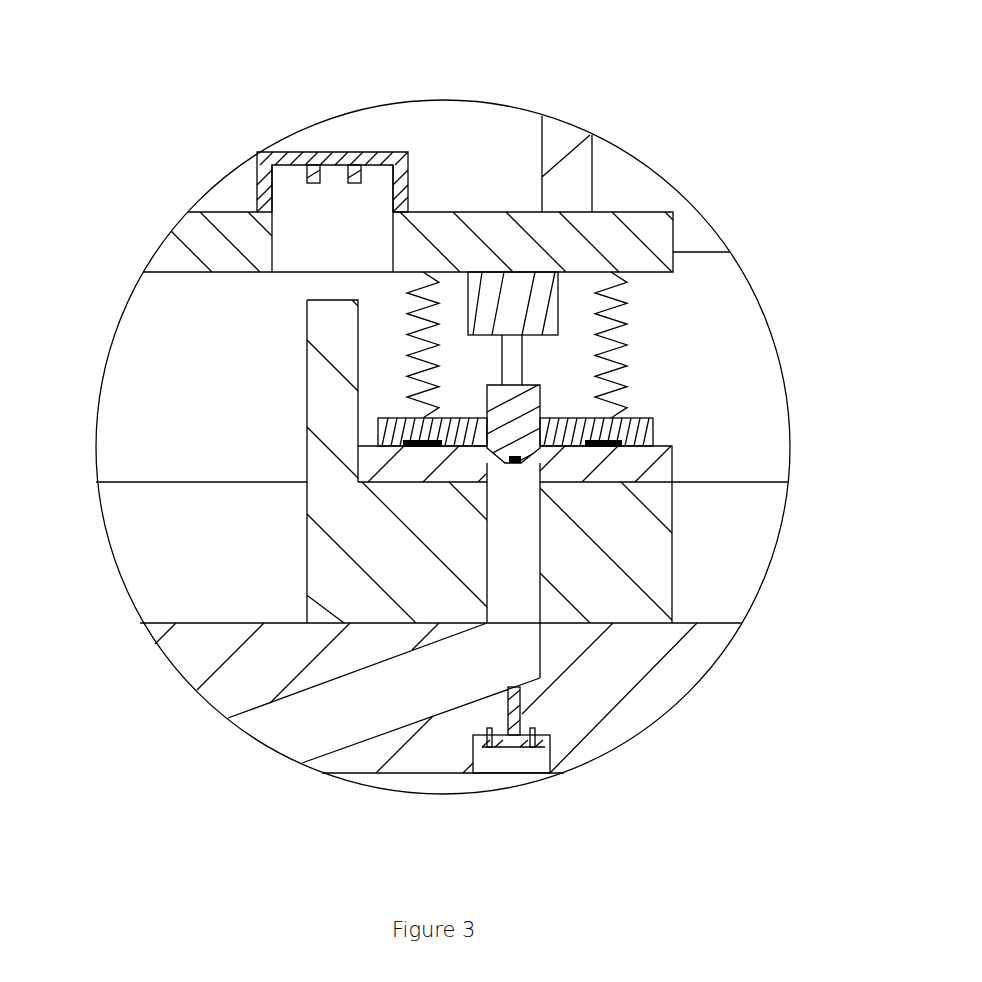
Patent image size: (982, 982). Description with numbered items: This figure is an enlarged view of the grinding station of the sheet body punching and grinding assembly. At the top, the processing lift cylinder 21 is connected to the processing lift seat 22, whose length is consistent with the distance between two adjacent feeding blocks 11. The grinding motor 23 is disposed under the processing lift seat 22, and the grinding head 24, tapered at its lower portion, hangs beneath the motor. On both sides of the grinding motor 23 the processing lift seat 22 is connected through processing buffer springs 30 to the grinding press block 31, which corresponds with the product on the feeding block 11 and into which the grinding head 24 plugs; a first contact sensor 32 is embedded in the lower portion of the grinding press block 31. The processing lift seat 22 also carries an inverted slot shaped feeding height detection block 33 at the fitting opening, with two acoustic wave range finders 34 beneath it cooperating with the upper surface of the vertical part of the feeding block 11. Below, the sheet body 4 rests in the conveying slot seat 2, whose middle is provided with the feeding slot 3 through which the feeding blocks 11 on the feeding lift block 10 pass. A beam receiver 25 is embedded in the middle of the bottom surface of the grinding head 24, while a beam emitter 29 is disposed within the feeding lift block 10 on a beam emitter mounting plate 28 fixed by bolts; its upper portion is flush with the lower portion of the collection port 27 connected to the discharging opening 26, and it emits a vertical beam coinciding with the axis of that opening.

The conveying slot seat 2 is at (190, 338).
The feeding slot 3 is at (165, 563).
The sheet body 4 is at (467, 437).
The feeding lift block 10 is at (220, 643).
The feeding block 11 is at (345, 525).
The processing lift cylinder 21 is at (568, 160).
The processing lift seat 22 is at (203, 243).
The grinding motor 23 is at (503, 380).
The grinding head 24 is at (523, 408).
The beam receiver 25 is at (540, 518).
The discharging opening 26 is at (517, 577).
The collection port 27 is at (410, 700).
The beam emitter mounting plate 28 is at (503, 733).
The beam emitter 29 is at (552, 773).
The processing buffer spring 30 is at (600, 410).
The grinding press block 31 is at (657, 418).
The first contact sensor 32 is at (605, 448).
The feeding height detection block 33 is at (390, 152).
The acoustic wave range finder 34 is at (283, 152).